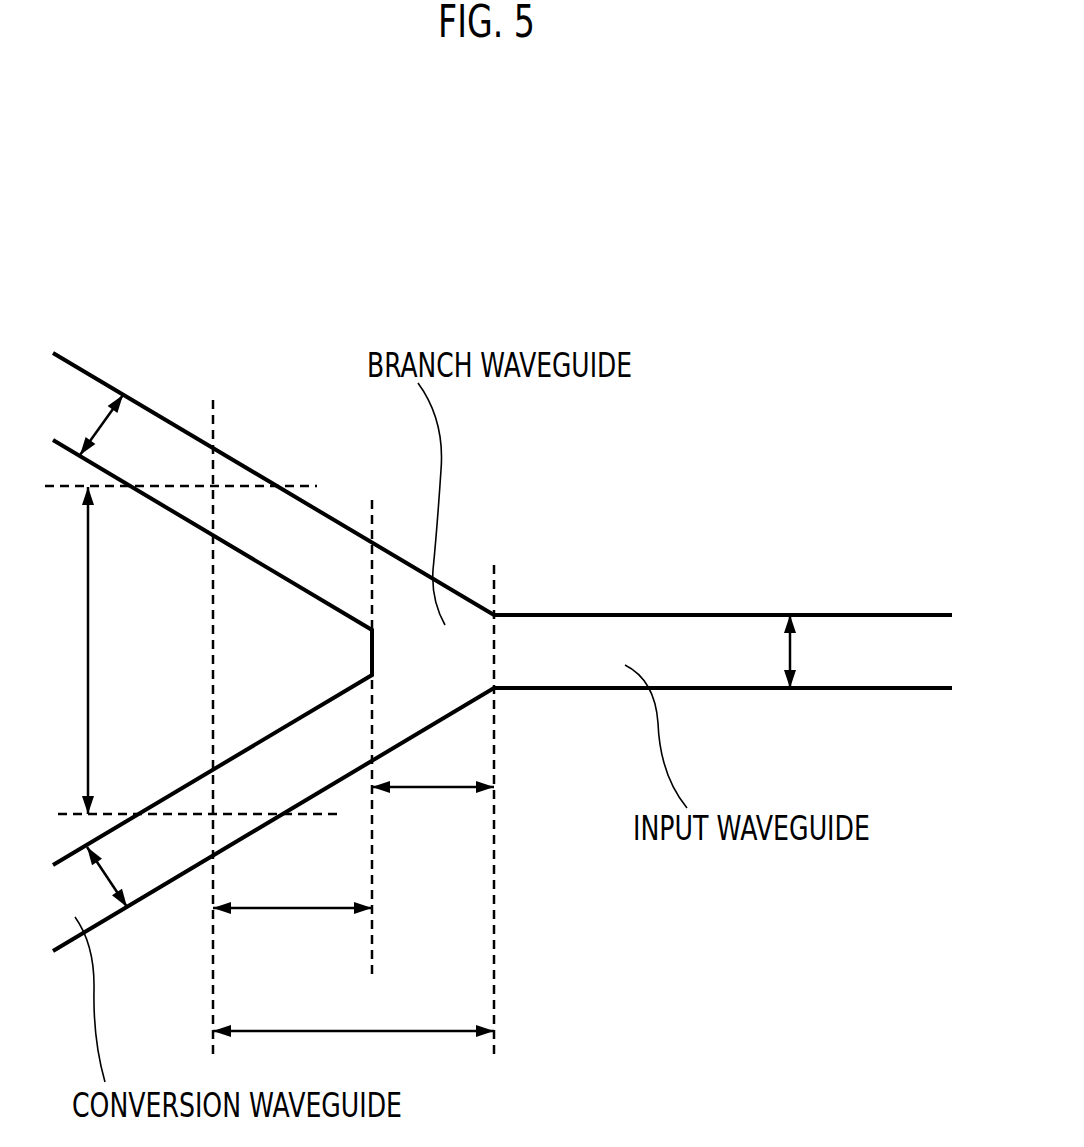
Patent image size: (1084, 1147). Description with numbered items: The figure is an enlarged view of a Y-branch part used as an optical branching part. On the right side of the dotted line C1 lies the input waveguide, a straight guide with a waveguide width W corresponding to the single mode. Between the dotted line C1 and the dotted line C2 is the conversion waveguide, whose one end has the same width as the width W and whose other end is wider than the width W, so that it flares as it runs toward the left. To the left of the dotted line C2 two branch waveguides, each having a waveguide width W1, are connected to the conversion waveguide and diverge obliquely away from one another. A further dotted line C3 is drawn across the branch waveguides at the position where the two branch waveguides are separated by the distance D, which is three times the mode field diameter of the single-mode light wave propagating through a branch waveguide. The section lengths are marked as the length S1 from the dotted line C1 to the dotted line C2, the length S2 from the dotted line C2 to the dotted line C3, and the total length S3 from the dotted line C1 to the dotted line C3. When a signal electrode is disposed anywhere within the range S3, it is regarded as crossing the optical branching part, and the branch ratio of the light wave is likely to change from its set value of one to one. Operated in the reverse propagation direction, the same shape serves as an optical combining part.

The dotted line C1 is at (497, 793).
The dotted line C2 is at (378, 720).
The dotted line C3 is at (216, 711).
The waveguide width W is at (807, 651).
The waveguide width of branch waveguide W1 is at (96, 651).
The distance D is at (192, 650).
The section from C1 to C2 S1 is at (433, 807).
The section from C2 to C3 S2 is at (292, 928).
The range from C1 to C3 S3 is at (353, 1050).